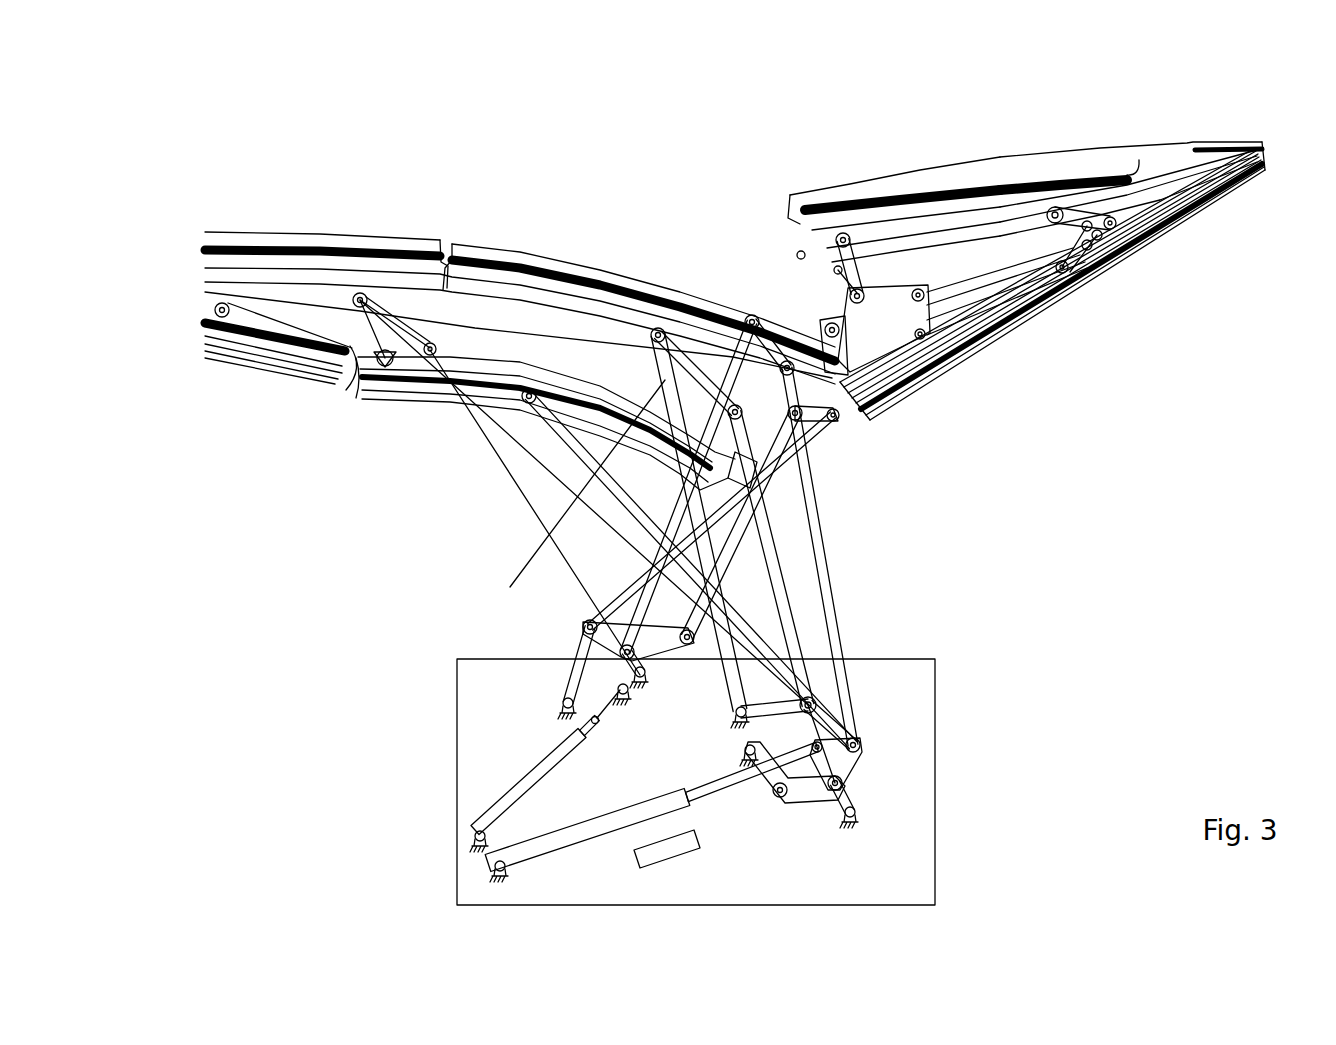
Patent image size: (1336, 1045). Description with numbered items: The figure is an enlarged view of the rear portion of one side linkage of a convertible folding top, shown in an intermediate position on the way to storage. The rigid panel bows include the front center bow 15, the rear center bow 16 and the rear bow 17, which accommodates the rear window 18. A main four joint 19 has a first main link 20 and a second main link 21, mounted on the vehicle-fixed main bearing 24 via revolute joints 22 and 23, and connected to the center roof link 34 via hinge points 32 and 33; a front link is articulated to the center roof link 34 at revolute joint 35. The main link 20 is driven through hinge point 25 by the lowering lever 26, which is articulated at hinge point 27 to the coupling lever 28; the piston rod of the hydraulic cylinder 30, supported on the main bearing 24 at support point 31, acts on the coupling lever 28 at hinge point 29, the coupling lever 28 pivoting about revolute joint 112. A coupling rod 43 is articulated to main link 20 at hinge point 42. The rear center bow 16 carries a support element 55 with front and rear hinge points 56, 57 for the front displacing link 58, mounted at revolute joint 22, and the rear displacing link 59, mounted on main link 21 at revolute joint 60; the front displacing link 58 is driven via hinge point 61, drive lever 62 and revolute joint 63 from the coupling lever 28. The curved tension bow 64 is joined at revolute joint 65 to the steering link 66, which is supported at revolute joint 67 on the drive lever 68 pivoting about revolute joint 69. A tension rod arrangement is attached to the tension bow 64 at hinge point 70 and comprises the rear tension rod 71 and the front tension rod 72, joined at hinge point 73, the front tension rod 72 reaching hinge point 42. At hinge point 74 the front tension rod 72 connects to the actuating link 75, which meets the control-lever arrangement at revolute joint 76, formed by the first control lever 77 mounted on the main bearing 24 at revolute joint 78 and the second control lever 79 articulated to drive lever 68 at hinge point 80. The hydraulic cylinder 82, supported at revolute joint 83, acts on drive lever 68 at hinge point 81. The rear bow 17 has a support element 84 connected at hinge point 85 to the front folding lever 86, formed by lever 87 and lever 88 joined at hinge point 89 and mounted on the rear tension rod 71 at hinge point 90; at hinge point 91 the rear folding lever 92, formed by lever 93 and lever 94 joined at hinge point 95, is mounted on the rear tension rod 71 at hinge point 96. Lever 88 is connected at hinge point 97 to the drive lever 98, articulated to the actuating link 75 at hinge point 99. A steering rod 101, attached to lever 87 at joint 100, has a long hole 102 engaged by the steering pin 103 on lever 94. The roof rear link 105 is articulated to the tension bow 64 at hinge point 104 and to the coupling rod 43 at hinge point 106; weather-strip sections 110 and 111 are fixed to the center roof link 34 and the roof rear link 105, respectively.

The panel bow 15 is at (221, 240).
The panel bow 16 is at (471, 254).
The panel bow 17 is at (819, 196).
The rear window 18 is at (983, 170).
The main four joint 19 is at (593, 572).
The first main link 20 is at (552, 492).
The second main link 21 is at (552, 430).
The revolute joint 22 is at (747, 757).
The revolute joint 23 is at (863, 815).
The main bearing 24 is at (905, 872).
The hinge point 25 is at (812, 705).
The lowering lever 26 is at (840, 728).
The hinge point 27 is at (860, 745).
The coupling lever 28 is at (807, 792).
The hinge point 29 is at (858, 738).
The hydraulic cylinder 30 is at (623, 820).
The support point 31 is at (497, 875).
The hinge point 32 is at (426, 356).
The hinge point 33 is at (527, 402).
The center roof link 34 is at (288, 347).
The revolute joint 35 is at (222, 320).
The hinge point 42 is at (357, 294).
The coupling rod 43 is at (260, 293).
The support element 55 is at (677, 350).
The front hinge point 56 is at (655, 330).
The rear hinge point 57 is at (800, 433).
The front displacing link 58 is at (570, 498).
The rear displacing link 59 is at (770, 520).
The revolute joint 60 is at (848, 784).
The hinge point 61 is at (780, 797).
The drive lever 62 is at (827, 792).
The revolute joint 63 is at (857, 788).
The tension bow 64 is at (1217, 170).
The revolute joint 65 is at (802, 423).
The steering link 66 is at (727, 562).
The revolute joint 67 is at (700, 633).
The drive lever 68 is at (600, 637).
The revolute joint 69 is at (612, 692).
The hinge point 70 is at (1120, 223).
The rear tension rod 71 is at (990, 290).
The front tension rod 72 is at (397, 303).
The hinge point 73 is at (838, 425).
The hinge point 74 is at (748, 319).
The actuating link 75 is at (688, 543).
The revolute joint 76 is at (612, 680).
The first control lever 77 is at (619, 697).
The revolute joint 78 is at (624, 680).
The second control lever 79 is at (580, 660).
The hinge point 80 is at (583, 630).
The hinge point 81 is at (646, 688).
The hydraulic cylinder 82 is at (503, 813).
The revolute joint 83 is at (473, 847).
The support element 84 is at (1013, 222).
The hinge point 85 is at (845, 238).
The front folding lever 86 is at (859, 290).
The lever 87 is at (836, 267).
The lever 88 is at (882, 292).
The hinge point 89 is at (853, 287).
The hinge point 90 is at (930, 322).
The hinge point 91 is at (1064, 214).
The rear folding lever 92 is at (1105, 228).
The lever 93 is at (1086, 220).
The lever 94 is at (1097, 277).
The hinge point 95 is at (1110, 232).
The hinge point 96 is at (1078, 272).
The hinge point 97 is at (967, 300).
The drive lever 98 is at (858, 318).
The hinge point 99 is at (880, 388).
The joint 100 is at (800, 253).
The steering rod 101 is at (995, 255).
The long hole 102 is at (1037, 248).
The steering pin 103 is at (1117, 263).
The hinge point 104 is at (845, 418).
The roof rear link 105 is at (582, 375).
The hinge point 106 is at (357, 388).
The weather-strip section 110 is at (258, 352).
The weather-strip section 111 is at (430, 393).
The revolute joint 112 is at (742, 718).